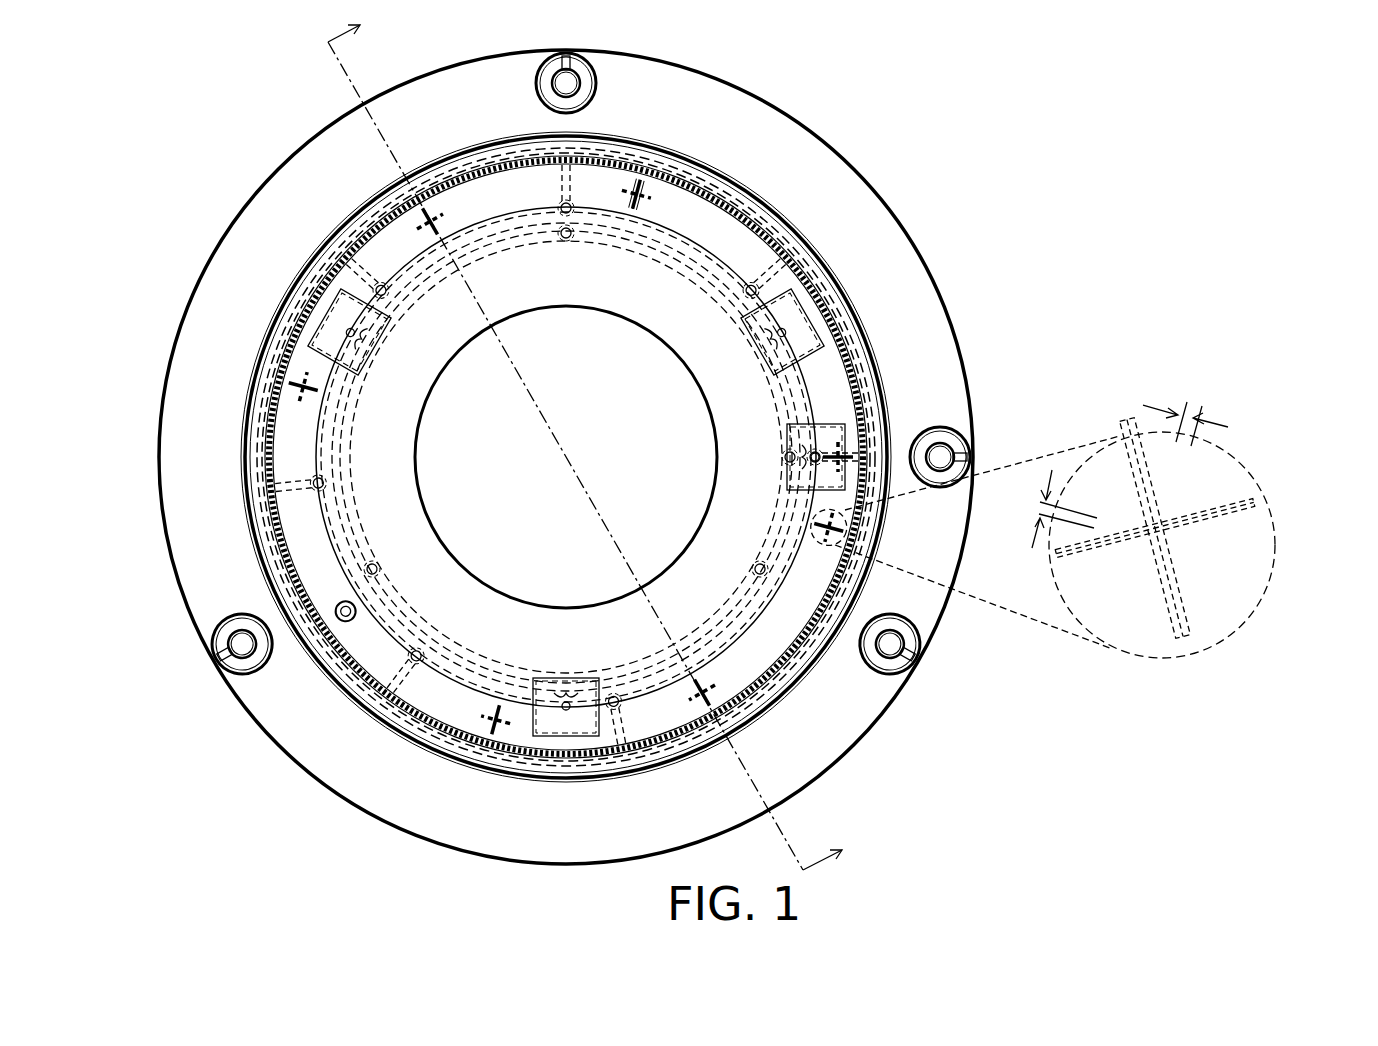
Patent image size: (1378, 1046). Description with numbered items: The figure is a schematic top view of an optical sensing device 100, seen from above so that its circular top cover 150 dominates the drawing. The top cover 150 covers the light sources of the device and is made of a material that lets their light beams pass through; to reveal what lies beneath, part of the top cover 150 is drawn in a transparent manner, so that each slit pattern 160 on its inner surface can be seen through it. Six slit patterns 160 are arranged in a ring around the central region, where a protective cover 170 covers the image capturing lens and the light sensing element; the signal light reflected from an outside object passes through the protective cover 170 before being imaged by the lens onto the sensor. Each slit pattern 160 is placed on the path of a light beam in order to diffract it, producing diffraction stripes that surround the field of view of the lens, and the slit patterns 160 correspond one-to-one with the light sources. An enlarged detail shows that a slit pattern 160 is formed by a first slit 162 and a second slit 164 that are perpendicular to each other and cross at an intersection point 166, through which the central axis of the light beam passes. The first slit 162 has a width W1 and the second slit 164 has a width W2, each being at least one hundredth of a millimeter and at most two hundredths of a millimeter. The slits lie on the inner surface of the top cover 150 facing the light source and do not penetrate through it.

The optical sensing device 100 is at (1364, 858).
The top cover 150 is at (492, 190).
The slit pattern 160 is at (370, 197).
The first slit 162 is at (645, 190).
The second slit 164 is at (645, 195).
The intersection point 166 is at (645, 192).
The protective cover 170 is at (642, 443).
The width of the first slit W1 is at (1185, 407).
The width of the second slit W2 is at (1044, 509).